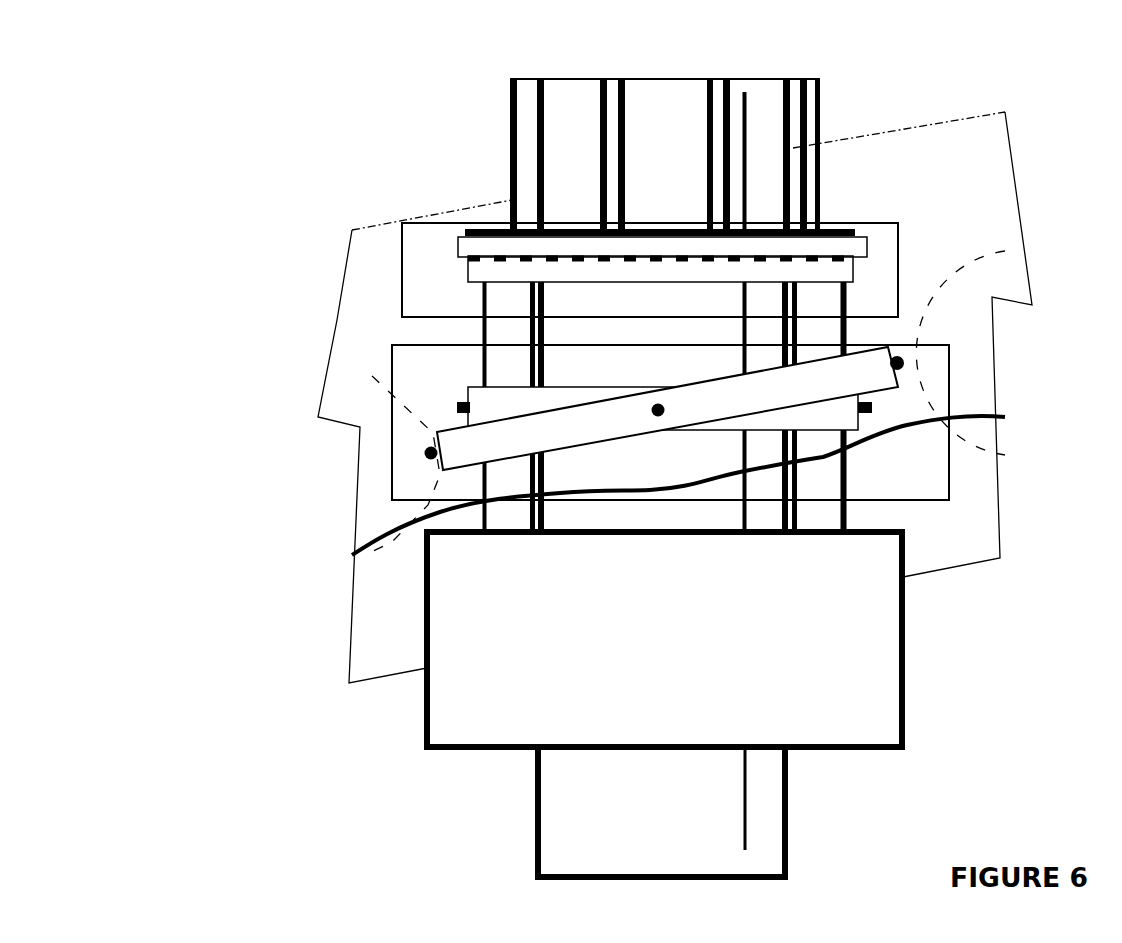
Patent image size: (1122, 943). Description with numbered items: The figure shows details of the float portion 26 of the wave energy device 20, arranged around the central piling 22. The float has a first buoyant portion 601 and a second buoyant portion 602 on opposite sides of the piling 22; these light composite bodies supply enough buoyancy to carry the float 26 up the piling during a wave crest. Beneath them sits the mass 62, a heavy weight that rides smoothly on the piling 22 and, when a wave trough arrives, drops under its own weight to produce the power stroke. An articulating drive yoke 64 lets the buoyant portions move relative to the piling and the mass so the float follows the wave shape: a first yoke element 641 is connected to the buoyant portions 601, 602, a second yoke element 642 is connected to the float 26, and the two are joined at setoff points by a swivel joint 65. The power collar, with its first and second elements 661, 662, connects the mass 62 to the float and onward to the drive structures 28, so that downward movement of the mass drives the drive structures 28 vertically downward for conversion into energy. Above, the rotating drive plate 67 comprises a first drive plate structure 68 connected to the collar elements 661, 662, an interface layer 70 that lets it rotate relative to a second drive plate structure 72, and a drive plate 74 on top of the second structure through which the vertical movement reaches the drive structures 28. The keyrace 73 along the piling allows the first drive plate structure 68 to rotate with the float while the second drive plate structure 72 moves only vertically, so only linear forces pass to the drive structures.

The wave energy device 20 is at (282, 125).
The piling 22 is at (577, 828).
The float portion 26 is at (940, 162).
The drive structures 28 is at (604, 88).
The mass 62 is at (865, 634).
The articulating drive yoke 64 is at (392, 387).
The first yoke element 641 is at (867, 378).
The second yoke element 642 is at (845, 418).
The swivel joint 65 is at (891, 360).
The first buoyant portion 601 is at (962, 342).
The second buoyant portion 602 is at (380, 457).
The first element of power collar 661 is at (835, 520).
The second element of power collar 662 is at (515, 519).
The rotating drive plate 67 is at (401, 252).
The first drive plate structure 68 is at (835, 275).
The interface layer 70 is at (837, 266).
The second drive plate structure 72 is at (845, 243).
The keyrace 73 is at (742, 778).
The drive plate 74 is at (510, 223).